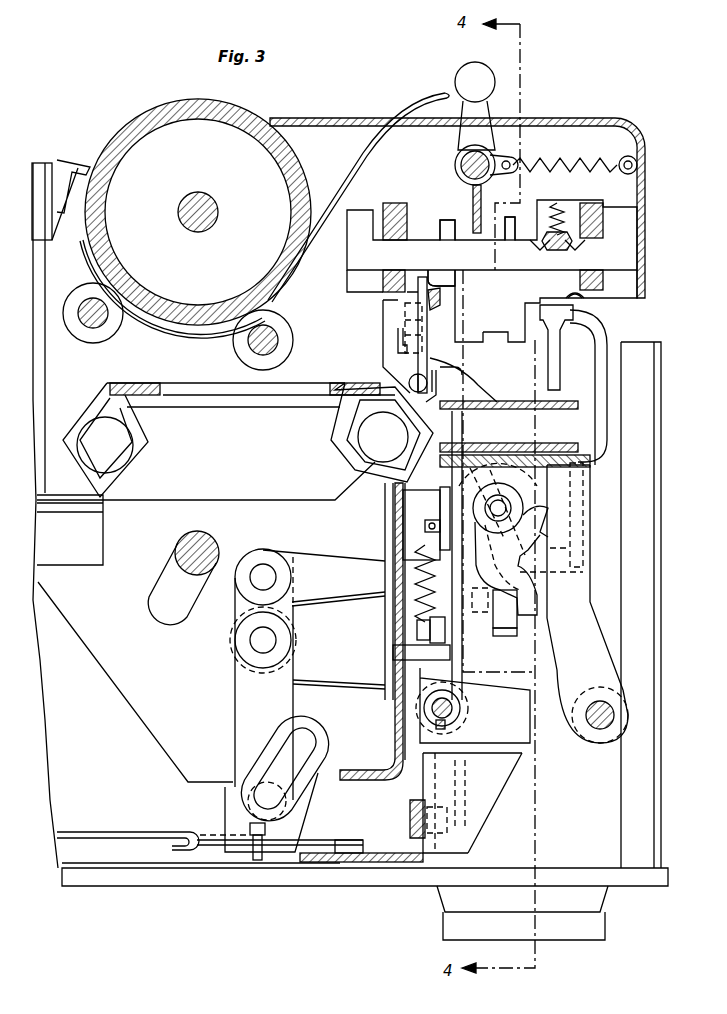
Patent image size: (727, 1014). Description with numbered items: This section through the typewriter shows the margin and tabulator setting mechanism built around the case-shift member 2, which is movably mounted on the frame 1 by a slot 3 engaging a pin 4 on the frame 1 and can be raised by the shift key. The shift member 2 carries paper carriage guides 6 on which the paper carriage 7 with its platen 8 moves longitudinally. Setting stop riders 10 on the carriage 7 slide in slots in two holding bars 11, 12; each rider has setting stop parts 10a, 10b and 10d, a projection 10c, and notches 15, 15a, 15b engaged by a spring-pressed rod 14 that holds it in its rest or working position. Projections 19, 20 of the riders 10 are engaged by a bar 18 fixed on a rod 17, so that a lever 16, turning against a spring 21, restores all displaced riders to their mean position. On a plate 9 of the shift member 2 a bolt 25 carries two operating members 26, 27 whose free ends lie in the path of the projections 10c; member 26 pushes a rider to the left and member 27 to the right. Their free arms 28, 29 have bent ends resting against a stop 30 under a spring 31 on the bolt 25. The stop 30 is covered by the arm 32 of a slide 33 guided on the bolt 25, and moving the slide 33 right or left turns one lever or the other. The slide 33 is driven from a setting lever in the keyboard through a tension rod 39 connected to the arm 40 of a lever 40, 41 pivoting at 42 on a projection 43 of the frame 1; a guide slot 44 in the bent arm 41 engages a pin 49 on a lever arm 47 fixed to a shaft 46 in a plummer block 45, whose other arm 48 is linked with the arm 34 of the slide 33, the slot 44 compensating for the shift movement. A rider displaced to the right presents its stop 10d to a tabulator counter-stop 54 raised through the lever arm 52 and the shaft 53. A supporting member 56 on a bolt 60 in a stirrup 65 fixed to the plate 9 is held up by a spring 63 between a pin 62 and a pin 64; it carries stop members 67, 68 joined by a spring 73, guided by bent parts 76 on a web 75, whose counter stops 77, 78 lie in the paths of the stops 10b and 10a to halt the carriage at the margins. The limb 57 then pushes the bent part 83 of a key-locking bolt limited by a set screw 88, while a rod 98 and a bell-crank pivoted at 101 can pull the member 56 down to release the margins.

The frame 1 is at (639, 375).
The case-shift member 2 is at (107, 668).
The slot 3 is at (180, 618).
The pin 4 is at (205, 536).
The paper carriage guides 6 is at (126, 408).
The paper carriage 7 is at (590, 128).
The platen 8 is at (250, 123).
The plate 9 is at (400, 778).
The setting stop rider 10 is at (376, 254).
The setting stop 10a is at (443, 275).
The setting stop 10b is at (468, 305).
The projection 10c is at (500, 322).
The setting stop 10d is at (530, 292).
The holding bar 11 is at (392, 210).
The holding bar 12 is at (600, 210).
The rod 14 is at (557, 203).
The notch 15 is at (571, 204).
The notch 15a is at (536, 248).
The notch 15b is at (579, 247).
The lever 16 is at (483, 110).
The rod 17 is at (456, 168).
The bar 18 is at (484, 200).
The projection 19 is at (452, 213).
The projection 20 is at (512, 215).
The spring 21 is at (548, 159).
The bolt 25 is at (510, 511).
The operating member 26 is at (580, 320).
The operating member 27 is at (480, 394).
The free arm 28 is at (530, 595).
The free arm 29 is at (483, 614).
The stop 30 is at (519, 625).
The spring 31 is at (550, 510).
The arm 32 is at (508, 636).
The slide 33 is at (583, 492).
The arm 34 is at (305, 558).
The tension rod 39 is at (108, 832).
The arm 40 is at (212, 837).
The arm 41 is at (303, 806).
The pivot 42 is at (258, 865).
The projection 43 is at (292, 863).
The guide slot 44 is at (303, 757).
The plummer block 45 is at (323, 681).
The shaft 46 is at (277, 638).
The lever arm 47 is at (236, 697).
The lever arm 48 is at (266, 549).
The pin 49 is at (250, 790).
The lever arm 52 is at (553, 735).
The shaft 53 is at (450, 710).
The counter-stop 54 is at (598, 315).
The supporting member 56 is at (462, 428).
The limb 57 is at (467, 783).
The bolt 60 is at (440, 532).
The pin 62 is at (417, 630).
The spring 63 is at (397, 572).
The pin 64 is at (425, 526).
The stirrup 65 is at (410, 503).
The stop member 67 is at (432, 395).
The stop member 68 is at (415, 312).
The spring 73 is at (410, 380).
The web 75 is at (412, 305).
The bent parts 76 is at (403, 345).
The counter stop 77 is at (442, 296).
The counter stop 78 is at (418, 287).
The bent part 83 is at (483, 812).
The set screw 88 is at (410, 823).
The rod 98 is at (446, 726).
The pivot 101 is at (393, 657).